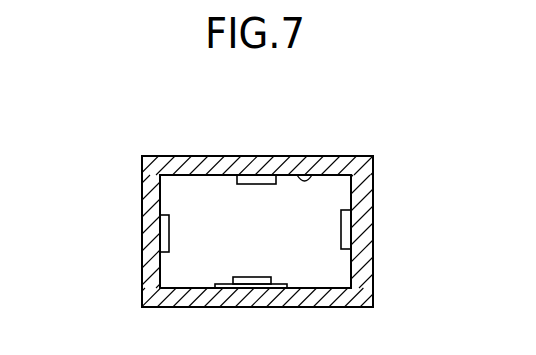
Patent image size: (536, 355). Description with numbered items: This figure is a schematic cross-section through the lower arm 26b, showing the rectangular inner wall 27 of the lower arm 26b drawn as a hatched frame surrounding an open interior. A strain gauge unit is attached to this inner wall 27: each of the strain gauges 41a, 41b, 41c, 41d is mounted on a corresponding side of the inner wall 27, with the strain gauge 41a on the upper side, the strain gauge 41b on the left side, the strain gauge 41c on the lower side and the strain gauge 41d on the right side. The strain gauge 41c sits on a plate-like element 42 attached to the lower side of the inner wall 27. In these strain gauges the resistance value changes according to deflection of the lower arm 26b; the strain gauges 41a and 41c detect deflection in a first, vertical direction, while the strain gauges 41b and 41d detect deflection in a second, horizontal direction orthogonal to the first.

The lower arm 26b is at (373, 182).
The inner wall 27 is at (318, 174).
The strain gauge 41a is at (264, 182).
The strain gauge 41b is at (163, 228).
The strain gauge 41c is at (263, 277).
The strain gauge 41d is at (347, 229).
The substrate 42 is at (258, 287).